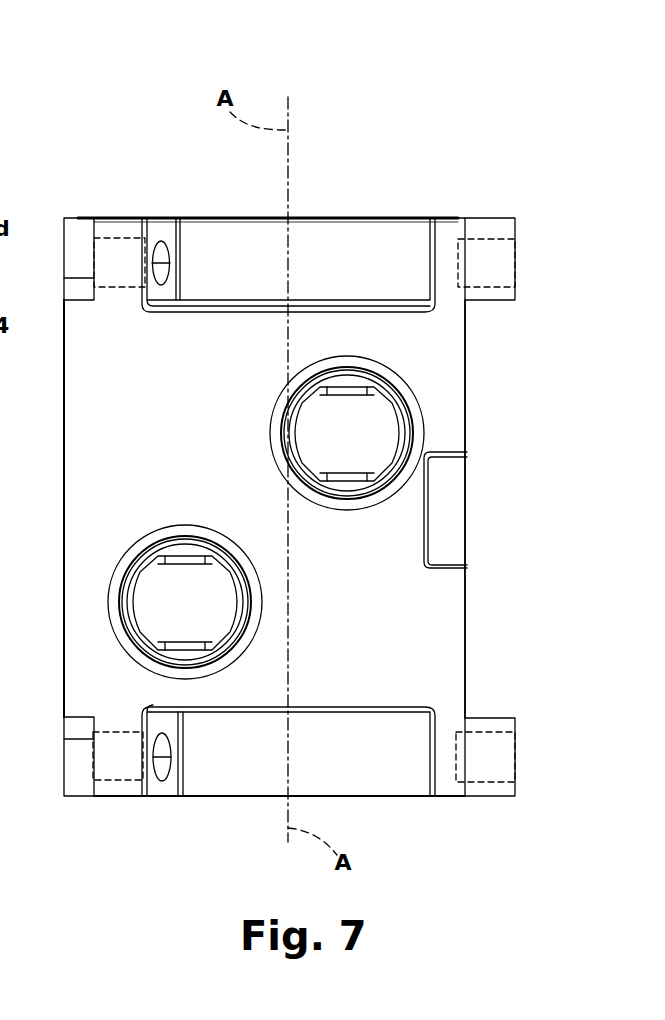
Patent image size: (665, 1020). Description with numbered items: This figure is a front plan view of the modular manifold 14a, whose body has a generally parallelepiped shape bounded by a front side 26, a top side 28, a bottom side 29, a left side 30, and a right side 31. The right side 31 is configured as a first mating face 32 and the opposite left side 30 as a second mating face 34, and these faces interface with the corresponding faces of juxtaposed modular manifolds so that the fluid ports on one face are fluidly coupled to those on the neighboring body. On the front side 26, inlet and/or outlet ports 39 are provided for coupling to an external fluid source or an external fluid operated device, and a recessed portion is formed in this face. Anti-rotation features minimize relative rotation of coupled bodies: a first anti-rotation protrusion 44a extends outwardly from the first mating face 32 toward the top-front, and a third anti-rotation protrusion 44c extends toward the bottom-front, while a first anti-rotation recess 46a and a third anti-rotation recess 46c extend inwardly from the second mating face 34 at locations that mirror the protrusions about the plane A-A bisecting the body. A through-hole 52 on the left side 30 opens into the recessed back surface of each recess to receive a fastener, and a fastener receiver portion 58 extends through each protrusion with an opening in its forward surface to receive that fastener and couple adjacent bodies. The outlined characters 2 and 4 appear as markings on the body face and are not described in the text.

The modular manifold 14a is at (599, 120).
The front side 26 is at (268, 330).
The top side 28 is at (400, 218).
The bottom side 29 is at (216, 798).
The left side 30 is at (64, 458).
The right side 31 is at (466, 655).
The first mating face 32 is at (534, 411).
The second mating face 34 is at (48, 637).
The inlet and/or outlet ports 39 is at (266, 517).
The first anti-rotation protrusion 44a is at (545, 236).
The third anti-rotation protrusion 44c is at (540, 766).
The first anti-rotation recess 46a is at (66, 252).
The third anti-rotation recess 46c is at (79, 800).
The through-hole 52 is at (120, 255).
The fastener receiver portion 58 is at (488, 258).
The face 2 is at (111, 370).
The face 4 is at (421, 668).